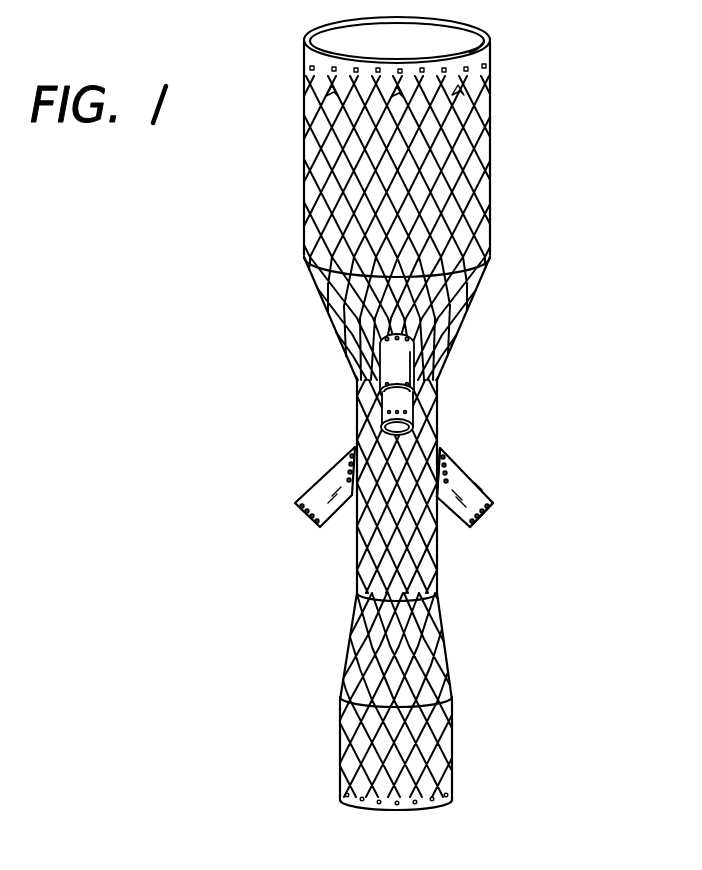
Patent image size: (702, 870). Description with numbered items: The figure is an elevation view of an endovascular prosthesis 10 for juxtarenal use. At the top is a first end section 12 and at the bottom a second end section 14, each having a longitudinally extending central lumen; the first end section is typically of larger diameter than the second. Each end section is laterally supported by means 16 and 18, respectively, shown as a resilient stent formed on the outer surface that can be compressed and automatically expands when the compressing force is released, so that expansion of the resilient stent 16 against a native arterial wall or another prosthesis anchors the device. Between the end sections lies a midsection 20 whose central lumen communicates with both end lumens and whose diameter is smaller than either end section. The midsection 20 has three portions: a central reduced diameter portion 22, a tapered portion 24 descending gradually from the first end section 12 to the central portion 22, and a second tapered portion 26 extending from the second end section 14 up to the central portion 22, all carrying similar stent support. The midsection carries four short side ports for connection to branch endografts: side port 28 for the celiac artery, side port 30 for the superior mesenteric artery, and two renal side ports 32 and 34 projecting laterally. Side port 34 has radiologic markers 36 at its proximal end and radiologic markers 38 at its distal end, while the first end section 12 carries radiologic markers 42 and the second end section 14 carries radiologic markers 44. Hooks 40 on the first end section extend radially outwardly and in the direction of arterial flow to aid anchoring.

The endovascular prosthesis 10 is at (414, 432).
The first end section 12 is at (400, 138).
The second end section 14 is at (438, 779).
The means for laterally supporting the first end section 16 is at (305, 178).
The means for laterally supporting the second end section 18 is at (443, 727).
The midsection 20 is at (405, 467).
The central reduced diameter portion 22 is at (437, 540).
The tapered portion 24 is at (472, 295).
The second tapered portion 26 is at (447, 655).
The side port 28 is at (385, 372).
The side port 30 is at (385, 420).
The renal side port 32 is at (305, 497).
The renal side port 34 is at (500, 493).
The radiologic markers 36 is at (442, 453).
The radiologic markers 38 is at (490, 515).
The hooks 40 is at (315, 100).
The radiologic markers 42 is at (487, 40).
The radiologic markers 44 is at (420, 805).